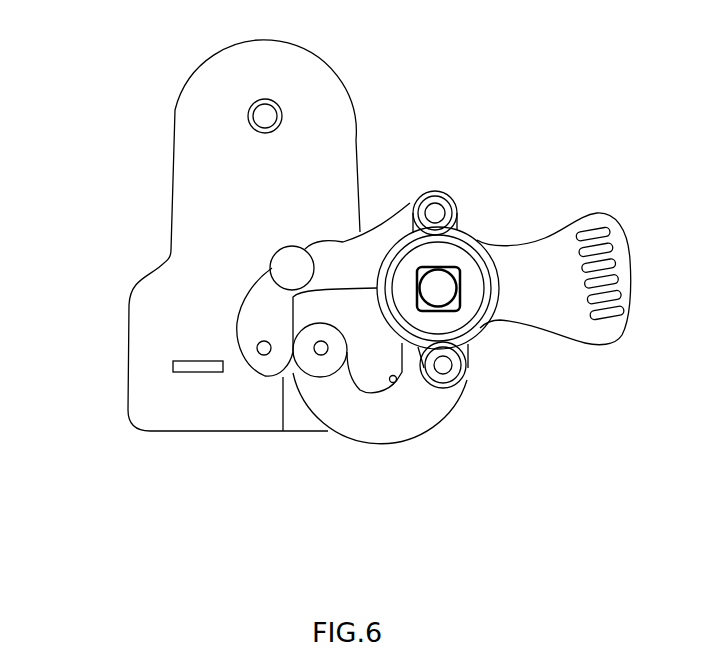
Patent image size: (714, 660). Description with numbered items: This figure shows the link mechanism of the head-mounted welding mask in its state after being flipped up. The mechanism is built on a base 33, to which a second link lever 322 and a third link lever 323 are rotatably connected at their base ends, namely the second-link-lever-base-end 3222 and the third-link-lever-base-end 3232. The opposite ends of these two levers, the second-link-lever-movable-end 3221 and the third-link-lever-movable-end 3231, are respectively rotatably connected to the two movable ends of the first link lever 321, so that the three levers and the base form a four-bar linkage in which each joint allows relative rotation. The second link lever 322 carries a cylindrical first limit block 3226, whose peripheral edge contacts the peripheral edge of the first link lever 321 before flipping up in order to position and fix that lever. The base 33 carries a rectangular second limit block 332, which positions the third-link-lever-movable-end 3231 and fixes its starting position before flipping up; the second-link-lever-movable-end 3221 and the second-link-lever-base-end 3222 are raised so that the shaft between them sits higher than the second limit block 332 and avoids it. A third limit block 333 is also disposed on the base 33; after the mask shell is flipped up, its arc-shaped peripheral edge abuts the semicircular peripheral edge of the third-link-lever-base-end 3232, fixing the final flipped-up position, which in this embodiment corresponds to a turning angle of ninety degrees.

The base 33 is at (212, 120).
The second limit block 332 is at (197, 358).
The third limit block 333 is at (298, 412).
The second link lever 322 is at (340, 257).
The first limit block 3226 is at (293, 268).
The second-link-lever-base-end 3222 is at (248, 355).
The third-link-lever-base-end 3232 is at (320, 363).
The first link lever 321 is at (477, 293).
The second-link-lever-movable-end 3221 is at (440, 208).
The third-link-lever-movable-end 3231 is at (443, 363).
The third link lever 323 is at (570, 505).